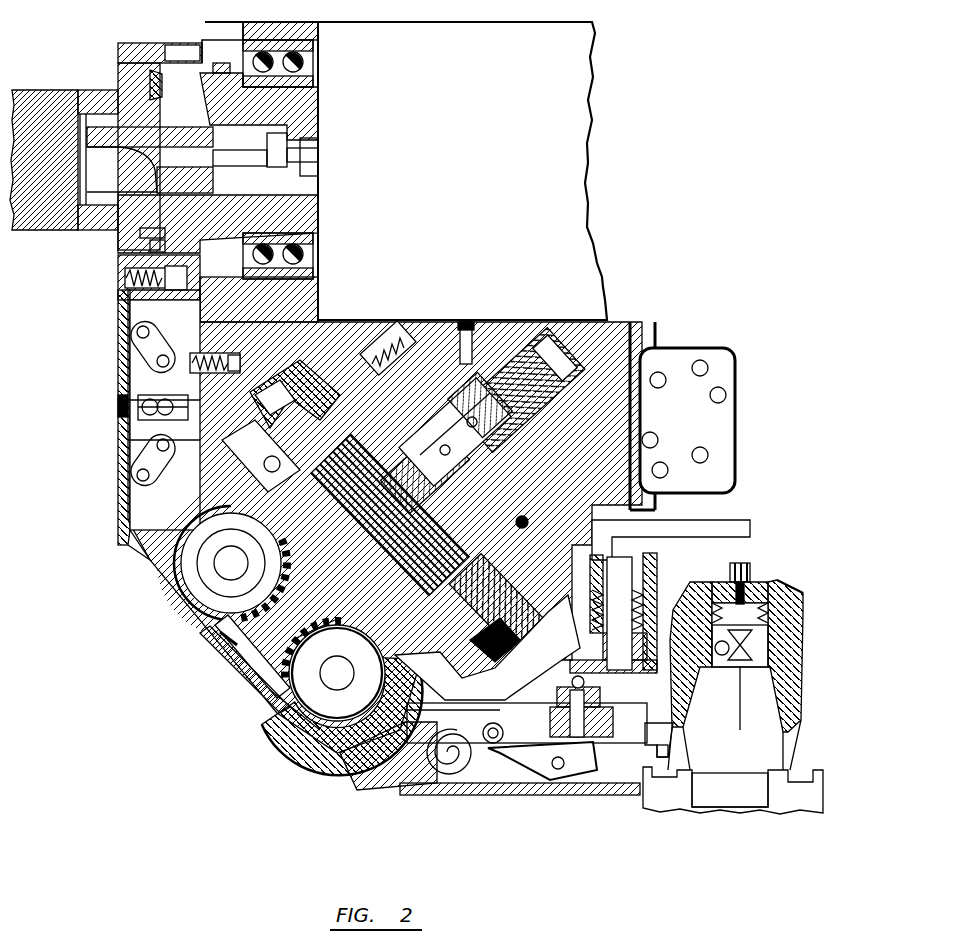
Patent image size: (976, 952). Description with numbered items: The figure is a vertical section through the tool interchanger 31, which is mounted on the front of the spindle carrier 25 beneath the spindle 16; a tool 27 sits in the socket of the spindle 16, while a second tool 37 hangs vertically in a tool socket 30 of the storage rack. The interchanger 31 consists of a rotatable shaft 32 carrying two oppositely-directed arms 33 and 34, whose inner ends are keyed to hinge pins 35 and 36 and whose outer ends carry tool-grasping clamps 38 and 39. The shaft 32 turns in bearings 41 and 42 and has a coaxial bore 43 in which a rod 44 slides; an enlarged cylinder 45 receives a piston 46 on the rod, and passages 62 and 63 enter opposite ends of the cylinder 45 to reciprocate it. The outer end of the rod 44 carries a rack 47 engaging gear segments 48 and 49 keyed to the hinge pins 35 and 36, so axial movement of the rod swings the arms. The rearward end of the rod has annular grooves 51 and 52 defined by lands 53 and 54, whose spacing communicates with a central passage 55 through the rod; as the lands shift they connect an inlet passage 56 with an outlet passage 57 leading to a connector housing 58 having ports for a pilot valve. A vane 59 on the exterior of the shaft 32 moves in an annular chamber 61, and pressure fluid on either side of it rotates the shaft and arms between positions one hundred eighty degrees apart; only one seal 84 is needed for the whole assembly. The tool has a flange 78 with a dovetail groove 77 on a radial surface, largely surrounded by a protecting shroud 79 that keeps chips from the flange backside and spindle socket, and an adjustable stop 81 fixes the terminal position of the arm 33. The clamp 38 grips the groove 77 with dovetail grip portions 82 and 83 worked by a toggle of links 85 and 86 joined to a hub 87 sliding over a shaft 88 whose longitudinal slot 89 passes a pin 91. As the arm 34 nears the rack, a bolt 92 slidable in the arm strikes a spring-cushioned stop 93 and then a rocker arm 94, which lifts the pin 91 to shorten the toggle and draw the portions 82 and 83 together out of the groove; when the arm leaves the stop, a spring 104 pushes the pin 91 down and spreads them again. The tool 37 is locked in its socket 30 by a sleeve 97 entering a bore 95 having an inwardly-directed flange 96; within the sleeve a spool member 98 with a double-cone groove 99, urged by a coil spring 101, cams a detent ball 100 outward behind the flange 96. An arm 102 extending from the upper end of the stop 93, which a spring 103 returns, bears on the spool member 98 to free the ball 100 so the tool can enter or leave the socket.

The spindle 16 is at (318, 93).
The spindle carrier 25 is at (555, 186).
The tool 27 is at (32, 105).
The tool socket 30 is at (775, 580).
The interchanger 31 is at (140, 548).
The rotatable shaft 32 is at (298, 740).
The arm 33 is at (118, 385).
The arm 34 is at (530, 797).
The hinge pin 35 is at (232, 580).
The hinge pin 36 is at (328, 688).
The tool 37 is at (738, 775).
The tool-grasping clamp 38 is at (165, 278).
The tool-grasping clamp 39 is at (578, 780).
The bearing 41 is at (462, 655).
The bearing 42 is at (378, 345).
The coaxial bore 43 is at (258, 676).
The rod 44 is at (340, 615).
The cylinder 45 is at (528, 528).
The piston 46 is at (365, 545).
The rack 47 is at (275, 645).
The gear segment 48 is at (170, 592).
The gear segment 49 is at (280, 728).
The annular groove 51 is at (438, 448).
The annular groove 52 is at (470, 350).
The land 53 is at (478, 396).
The land 54 is at (512, 370).
The central passage 55 is at (490, 422).
The inlet passage 56 is at (635, 378).
The outlet passage 57 is at (630, 420).
The connector housing 58 is at (648, 338).
The vane 59 is at (500, 580).
The annular chamber 61 is at (285, 405).
The passage 62 is at (432, 458).
The passage 63 is at (285, 420).
The dovetail groove 77 is at (160, 78).
The flange 78 is at (125, 222).
The protecting shroud 79 is at (130, 46).
The adjustable stop 81 is at (225, 374).
The dovetail grip portion 82 is at (150, 232).
The dovetail grip portion 83 is at (152, 246).
The seal 84 is at (250, 462).
The link 85 is at (135, 345).
The link 86 is at (140, 488).
The hub 87 is at (140, 410).
The shaft 88 is at (180, 405).
The longitudinal slot 89 is at (148, 400).
The pin 91 is at (128, 450).
The bolt 92 is at (565, 683).
The spring-cushioned stop 93 is at (635, 675).
The rocker arm 94 is at (525, 770).
The bore 95 is at (762, 675).
The inwardly-directed flange 96 is at (790, 588).
The sleeve 97 is at (750, 668).
The spool member 98 is at (730, 660).
The double-cone groove 99 is at (722, 625).
The detent ball 100 is at (715, 645).
The coil spring 101 is at (775, 586).
The arm 102 is at (665, 528).
The spring 103 is at (645, 595).
The spring 104 is at (430, 775).